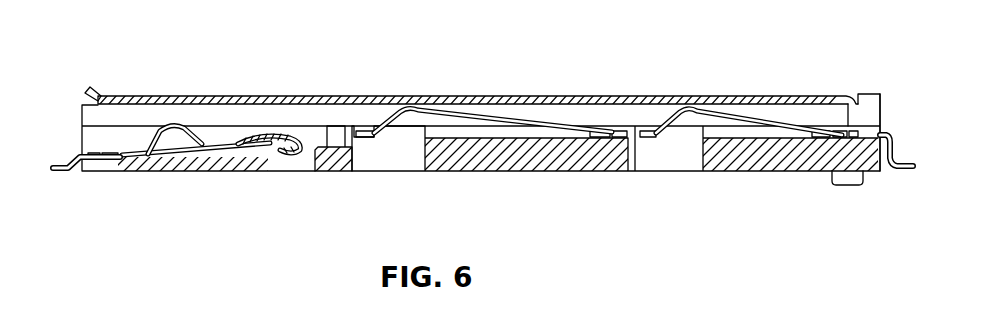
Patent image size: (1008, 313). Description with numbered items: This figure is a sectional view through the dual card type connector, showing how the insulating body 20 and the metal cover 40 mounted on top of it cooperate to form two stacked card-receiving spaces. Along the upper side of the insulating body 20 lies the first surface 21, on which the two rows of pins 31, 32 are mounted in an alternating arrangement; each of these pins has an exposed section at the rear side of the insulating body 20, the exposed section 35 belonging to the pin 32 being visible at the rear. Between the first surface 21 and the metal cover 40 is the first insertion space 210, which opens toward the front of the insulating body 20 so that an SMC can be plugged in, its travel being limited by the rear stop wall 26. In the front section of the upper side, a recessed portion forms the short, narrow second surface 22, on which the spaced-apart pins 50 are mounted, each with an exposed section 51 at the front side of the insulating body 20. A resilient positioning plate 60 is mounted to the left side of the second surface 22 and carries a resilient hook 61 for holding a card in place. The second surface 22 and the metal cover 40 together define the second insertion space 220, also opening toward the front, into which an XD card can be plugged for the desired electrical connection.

The insulating body 20 is at (531, 172).
The first surface 21 is at (363, 126).
The second surface 22 is at (324, 146).
The rear stop wall 26 is at (868, 105).
The pin 31 is at (438, 114).
The pin 32 is at (721, 116).
The exposed section 35 is at (903, 172).
The metal cover 40 is at (568, 100).
The pin 50 is at (290, 133).
The exposed section 51 is at (60, 174).
The resilient positioning plate 60 is at (146, 150).
The resilient hook 61 is at (177, 123).
The first insertion space 210 is at (530, 118).
The second insertion space 220 is at (118, 140).